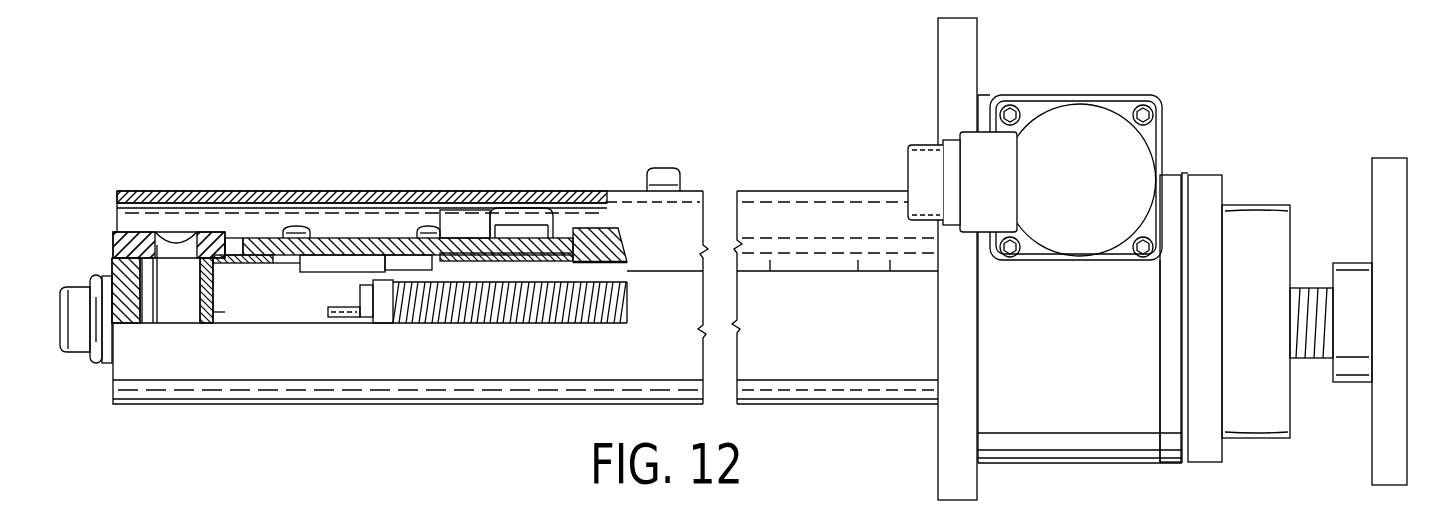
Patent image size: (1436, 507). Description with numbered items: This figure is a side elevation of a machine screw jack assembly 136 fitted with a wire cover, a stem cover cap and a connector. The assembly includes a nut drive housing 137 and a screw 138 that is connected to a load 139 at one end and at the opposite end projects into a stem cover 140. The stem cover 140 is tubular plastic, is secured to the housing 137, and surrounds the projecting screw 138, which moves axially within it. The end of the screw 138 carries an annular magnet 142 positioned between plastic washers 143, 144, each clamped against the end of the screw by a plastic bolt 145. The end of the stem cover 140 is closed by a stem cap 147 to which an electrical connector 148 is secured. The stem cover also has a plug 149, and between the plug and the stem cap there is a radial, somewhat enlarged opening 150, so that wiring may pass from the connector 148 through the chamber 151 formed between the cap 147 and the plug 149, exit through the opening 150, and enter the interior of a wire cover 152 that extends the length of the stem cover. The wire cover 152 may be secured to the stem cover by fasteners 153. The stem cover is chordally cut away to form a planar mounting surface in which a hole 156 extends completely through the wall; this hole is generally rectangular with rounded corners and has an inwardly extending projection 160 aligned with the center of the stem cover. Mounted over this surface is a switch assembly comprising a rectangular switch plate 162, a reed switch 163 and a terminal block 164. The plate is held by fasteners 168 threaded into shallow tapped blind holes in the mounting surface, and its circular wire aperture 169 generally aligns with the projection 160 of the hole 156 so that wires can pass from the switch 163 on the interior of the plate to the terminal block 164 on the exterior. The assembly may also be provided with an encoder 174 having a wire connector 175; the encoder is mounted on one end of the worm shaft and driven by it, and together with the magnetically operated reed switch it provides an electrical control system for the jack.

The machine screw jack assembly 136 is at (1212, 133).
The nut drive housing 137 is at (1120, 464).
The screw 138 is at (628, 300).
The load 139 is at (1395, 180).
The stem cover 140 is at (604, 226).
The annular magnet 142 is at (388, 324).
The plastic washer 143 is at (368, 318).
The plastic washer 144 is at (437, 325).
The plastic bolt 145 is at (318, 318).
The stem cap 147 is at (113, 265).
The electrical connector 148 is at (80, 352).
The plug 149 is at (226, 313).
The opening 150 is at (170, 250).
The chamber 151 is at (182, 313).
The wire cover 152 is at (803, 191).
The fasteners 153 is at (680, 165).
The hole 156 is at (287, 263).
The projection 160 is at (428, 263).
The switch plate 162 is at (282, 236).
The reed switch 163 is at (340, 263).
The terminal block 164 is at (530, 220).
The fasteners 168 is at (293, 232).
The wire aperture 169 is at (378, 230).
The encoder 174 is at (1092, 115).
The wire connector 175 is at (921, 145).